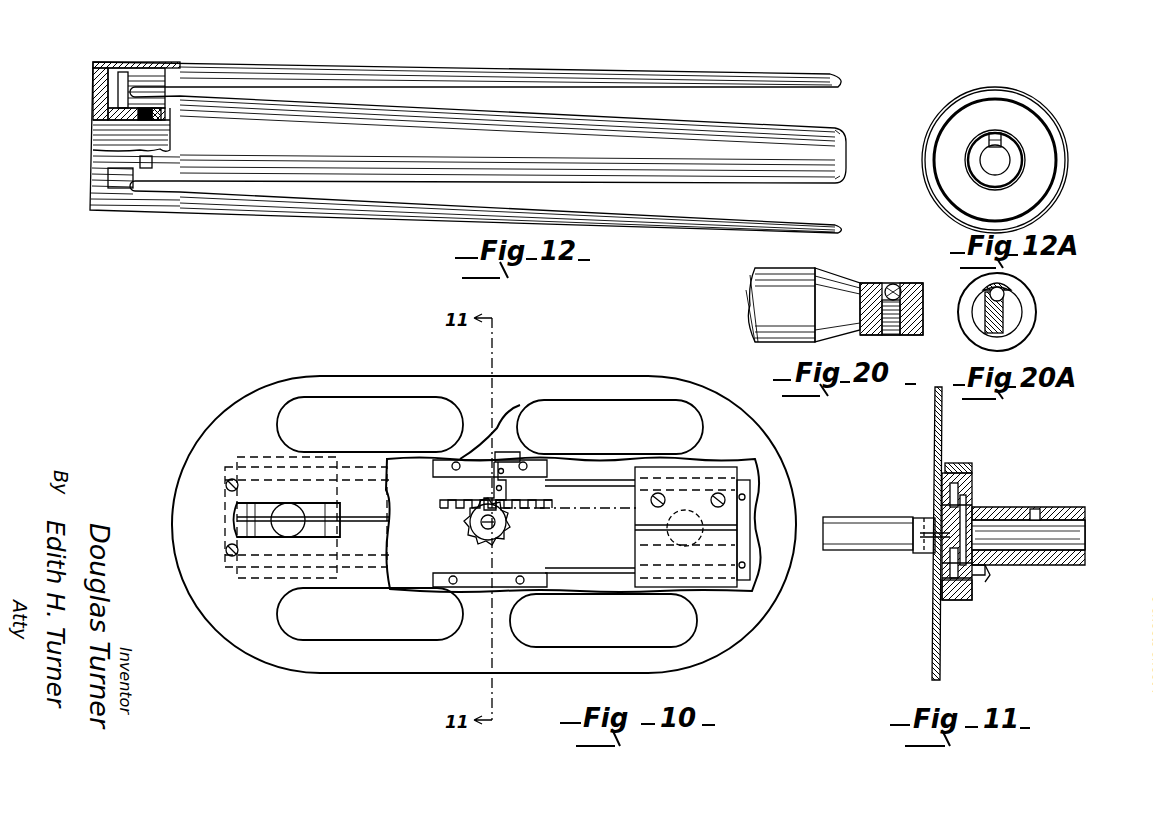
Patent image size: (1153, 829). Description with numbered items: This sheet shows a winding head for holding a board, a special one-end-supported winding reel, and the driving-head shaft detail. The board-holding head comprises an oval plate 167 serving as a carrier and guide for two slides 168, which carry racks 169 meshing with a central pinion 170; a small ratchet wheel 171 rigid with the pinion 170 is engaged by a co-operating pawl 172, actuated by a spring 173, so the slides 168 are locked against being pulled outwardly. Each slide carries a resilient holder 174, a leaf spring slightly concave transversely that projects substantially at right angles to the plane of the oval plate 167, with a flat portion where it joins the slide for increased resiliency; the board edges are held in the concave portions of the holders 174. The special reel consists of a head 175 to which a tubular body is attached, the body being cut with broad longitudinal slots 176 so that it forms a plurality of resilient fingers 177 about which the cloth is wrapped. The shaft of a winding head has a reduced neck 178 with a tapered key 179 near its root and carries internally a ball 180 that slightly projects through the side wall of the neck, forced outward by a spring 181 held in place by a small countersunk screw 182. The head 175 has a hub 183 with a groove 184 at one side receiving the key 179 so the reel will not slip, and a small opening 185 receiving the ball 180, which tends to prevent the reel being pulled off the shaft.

In FIG. 10, the oval plate 167 is at (600, 395).
In FIG. 11, the oval plate 167 is at (940, 649).
In FIG. 10, the slides 168 is at (578, 480).
In FIG. 11, the slides 168 is at (978, 492).
In FIG. 10, the racks 169 is at (593, 518).
In FIG. 11, the racks 169 is at (942, 505).
In FIG. 10, the central pinion 170 is at (470, 523).
In FIG. 11, the central pinion 170 is at (985, 566).
In FIG. 10, the ratchet wheel 171 is at (480, 545).
In FIG. 11, the ratchet wheel 171 is at (940, 560).
In FIG. 10, the pawl 172 is at (480, 462).
In FIG. 11, the pawl 172 is at (995, 449).
In FIG. 10, the spring 173 is at (460, 491).
In FIG. 10, the resilient holder 174 is at (237, 510).
In FIG. 11, the resilient holder 174 is at (840, 535).
In FIG. 12, the head 175 is at (93, 105).
In FIG. 12, the longitudinal slots 176 is at (452, 99).
In FIG. 12, the resilient fingers 177 is at (390, 140).
In FIG. 12A, the resilient fingers 177 is at (1070, 176).
In FIG. 20, the reduced neck 178 is at (840, 305).
In FIG. 20A, the reduced neck 178 is at (1008, 313).
In FIG. 20, the tapered key 179 is at (833, 275).
In FIG. 20A, the tapered key 179 is at (1005, 283).
In FIG. 20, the ball 180 is at (918, 273).
In FIG. 20, the spring 181 is at (905, 302).
In FIG. 20, the countersunk screw 182 is at (893, 336).
In FIG. 12, the hub 183 is at (140, 107).
In FIG. 12A, the hub 183 is at (1013, 157).
In FIG. 12, the groove 184 is at (103, 124).
In FIG. 11, the groove 184 is at (1085, 522).
In FIG. 12, the opening 185 is at (155, 108).
In FIG. 11, the opening 185 is at (1058, 485).